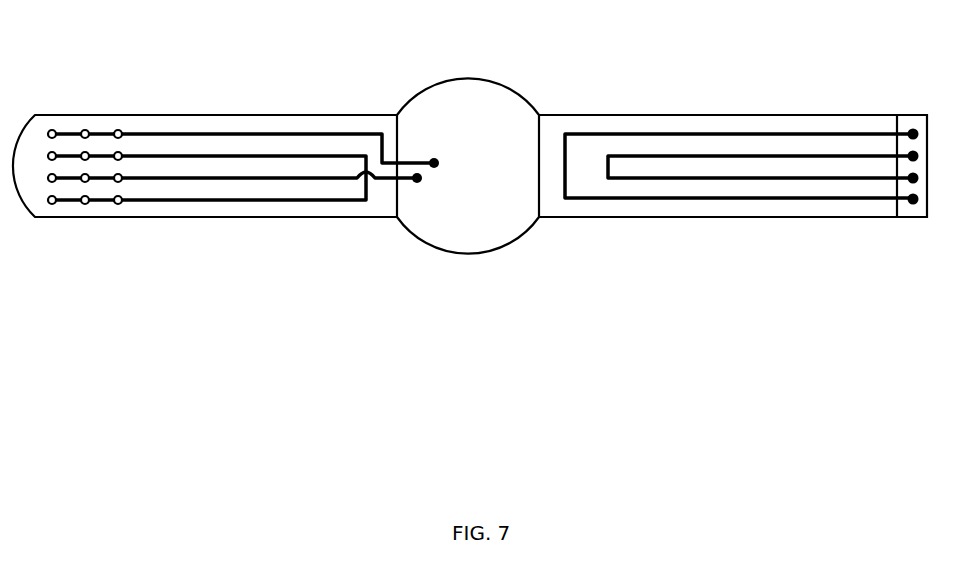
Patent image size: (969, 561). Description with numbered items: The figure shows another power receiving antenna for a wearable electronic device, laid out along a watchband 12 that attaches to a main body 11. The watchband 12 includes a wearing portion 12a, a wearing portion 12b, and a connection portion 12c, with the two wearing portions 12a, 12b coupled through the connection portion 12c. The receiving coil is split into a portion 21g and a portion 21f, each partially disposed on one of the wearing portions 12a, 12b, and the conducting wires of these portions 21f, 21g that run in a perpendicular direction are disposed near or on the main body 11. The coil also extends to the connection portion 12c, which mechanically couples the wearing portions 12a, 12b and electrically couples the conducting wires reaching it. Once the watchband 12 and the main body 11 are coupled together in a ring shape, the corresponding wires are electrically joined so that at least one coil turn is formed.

The main body 11 is at (480, 107).
The watchband 12 is at (470, 195).
The wearing portion 12a is at (65, 213).
The wearing portion 12b is at (618, 215).
The connection portion 12c is at (911, 207).
The portion of receiving coil 21g is at (165, 133).
The portion of receiving coil 21f is at (739, 141).